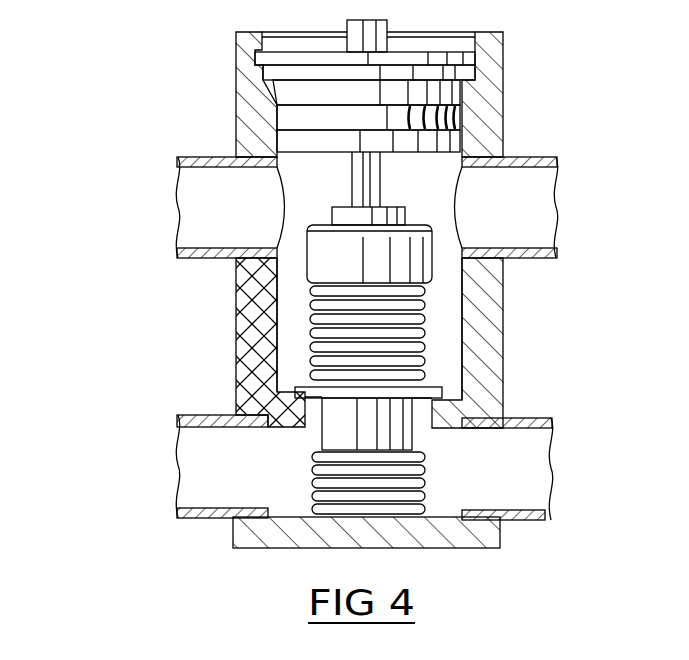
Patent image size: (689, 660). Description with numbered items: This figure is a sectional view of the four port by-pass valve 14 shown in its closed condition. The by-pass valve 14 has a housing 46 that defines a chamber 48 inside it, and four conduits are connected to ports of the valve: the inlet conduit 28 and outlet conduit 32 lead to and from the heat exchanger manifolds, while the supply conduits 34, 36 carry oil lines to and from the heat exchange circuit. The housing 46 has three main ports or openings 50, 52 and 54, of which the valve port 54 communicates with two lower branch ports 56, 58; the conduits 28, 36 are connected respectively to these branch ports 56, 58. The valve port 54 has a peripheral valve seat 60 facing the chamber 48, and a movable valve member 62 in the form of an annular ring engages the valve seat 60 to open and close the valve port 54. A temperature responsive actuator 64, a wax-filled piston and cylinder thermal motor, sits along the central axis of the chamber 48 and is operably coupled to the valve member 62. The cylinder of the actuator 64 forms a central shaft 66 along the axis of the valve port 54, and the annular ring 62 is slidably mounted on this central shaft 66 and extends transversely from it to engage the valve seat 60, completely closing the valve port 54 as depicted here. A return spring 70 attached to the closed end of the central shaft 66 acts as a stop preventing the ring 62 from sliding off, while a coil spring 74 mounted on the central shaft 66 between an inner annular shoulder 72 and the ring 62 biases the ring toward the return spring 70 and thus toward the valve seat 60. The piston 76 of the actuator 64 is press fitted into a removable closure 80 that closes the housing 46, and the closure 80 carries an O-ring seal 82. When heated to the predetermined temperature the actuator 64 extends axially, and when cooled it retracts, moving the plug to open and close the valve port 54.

The by-pass valve 14 is at (166, 74).
The inlet conduit 28 is at (182, 418).
The outlet conduit 32 is at (182, 157).
The supply conduit 34 is at (548, 157).
The supply conduit 36 is at (533, 520).
The housing 46 is at (480, 127).
The chamber 48 is at (262, 358).
The main port 50 is at (253, 232).
The main port 52 is at (475, 217).
The valve port 54 is at (420, 413).
The branch port 56 is at (255, 478).
The branch port 58 is at (468, 482).
The valve seat 60 is at (455, 395).
The valve member 62 is at (292, 383).
The temperature responsive actuator 64 is at (322, 262).
The central shaft 66 is at (342, 425).
The return spring 70 is at (360, 495).
The inner annular shoulder 72 is at (293, 348).
The coil spring 74 is at (420, 322).
The piston 76 is at (358, 175).
The removable closure 80 is at (447, 96).
The O-ring seal 82 is at (290, 120).